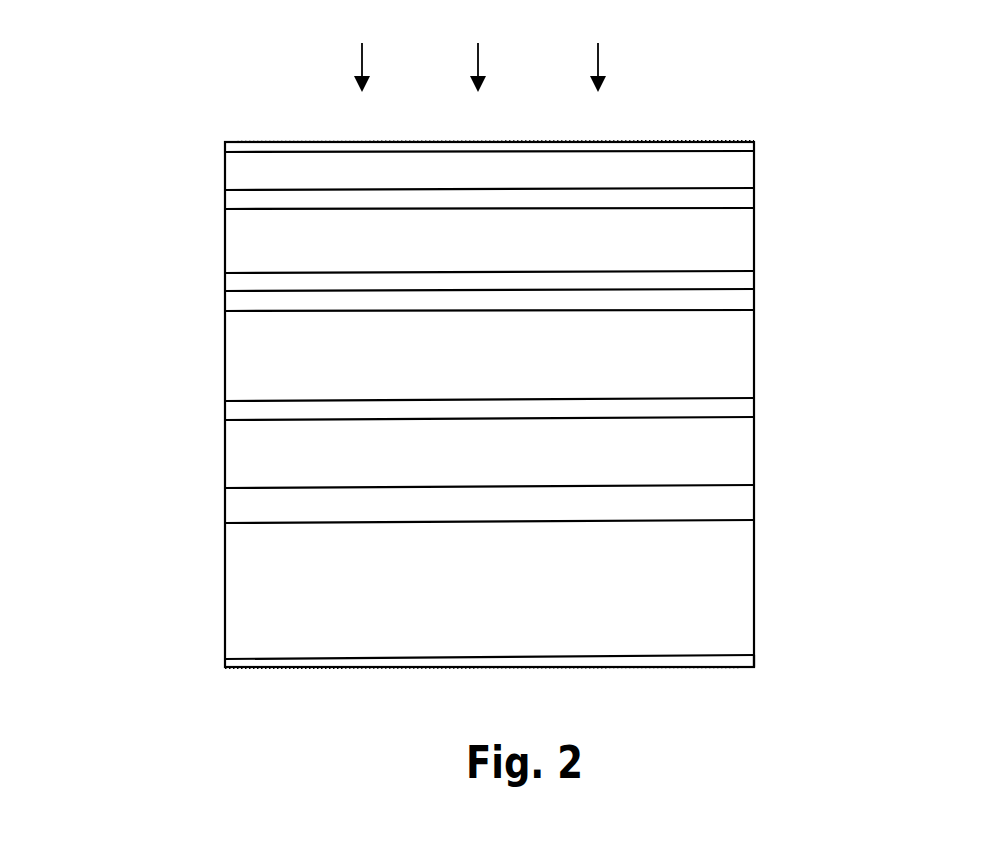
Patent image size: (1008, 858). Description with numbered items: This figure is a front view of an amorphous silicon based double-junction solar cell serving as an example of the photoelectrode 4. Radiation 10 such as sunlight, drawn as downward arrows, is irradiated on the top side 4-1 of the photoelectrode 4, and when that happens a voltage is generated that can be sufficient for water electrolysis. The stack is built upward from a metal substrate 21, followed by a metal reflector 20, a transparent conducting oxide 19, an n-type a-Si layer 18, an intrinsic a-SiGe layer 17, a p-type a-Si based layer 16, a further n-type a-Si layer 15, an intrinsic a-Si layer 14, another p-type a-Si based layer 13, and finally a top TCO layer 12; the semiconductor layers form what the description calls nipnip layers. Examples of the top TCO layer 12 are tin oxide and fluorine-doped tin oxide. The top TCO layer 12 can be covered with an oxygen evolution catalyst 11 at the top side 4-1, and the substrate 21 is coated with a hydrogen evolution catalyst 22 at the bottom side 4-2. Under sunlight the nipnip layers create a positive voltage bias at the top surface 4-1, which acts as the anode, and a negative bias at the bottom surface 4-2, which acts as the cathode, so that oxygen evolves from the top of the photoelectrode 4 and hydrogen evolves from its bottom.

The photoelectrode 4 is at (112, 372).
The top side 4-1 is at (232, 129).
The bottom side 4-2 is at (306, 684).
The radiation 10 is at (470, 58).
The oxygen evolution catalyst 11 is at (744, 139).
The TCO layer 12 is at (754, 170).
The p-type a-Si based layer 13 is at (754, 199).
The intrinsic a-Si layer 14 is at (754, 237).
The n-type a-Si layer 15 is at (754, 281).
The p-type a-Si based layer 16 is at (754, 301).
The intrinsic a-SiGe layer 17 is at (754, 350).
The n-type a-Si layer 18 is at (754, 407).
The transparent conducting oxide 19 is at (754, 447).
The metal reflector 20 is at (754, 501).
The metal substrate 21 is at (754, 588).
The hydrogen evolution catalyst 22 is at (755, 667).